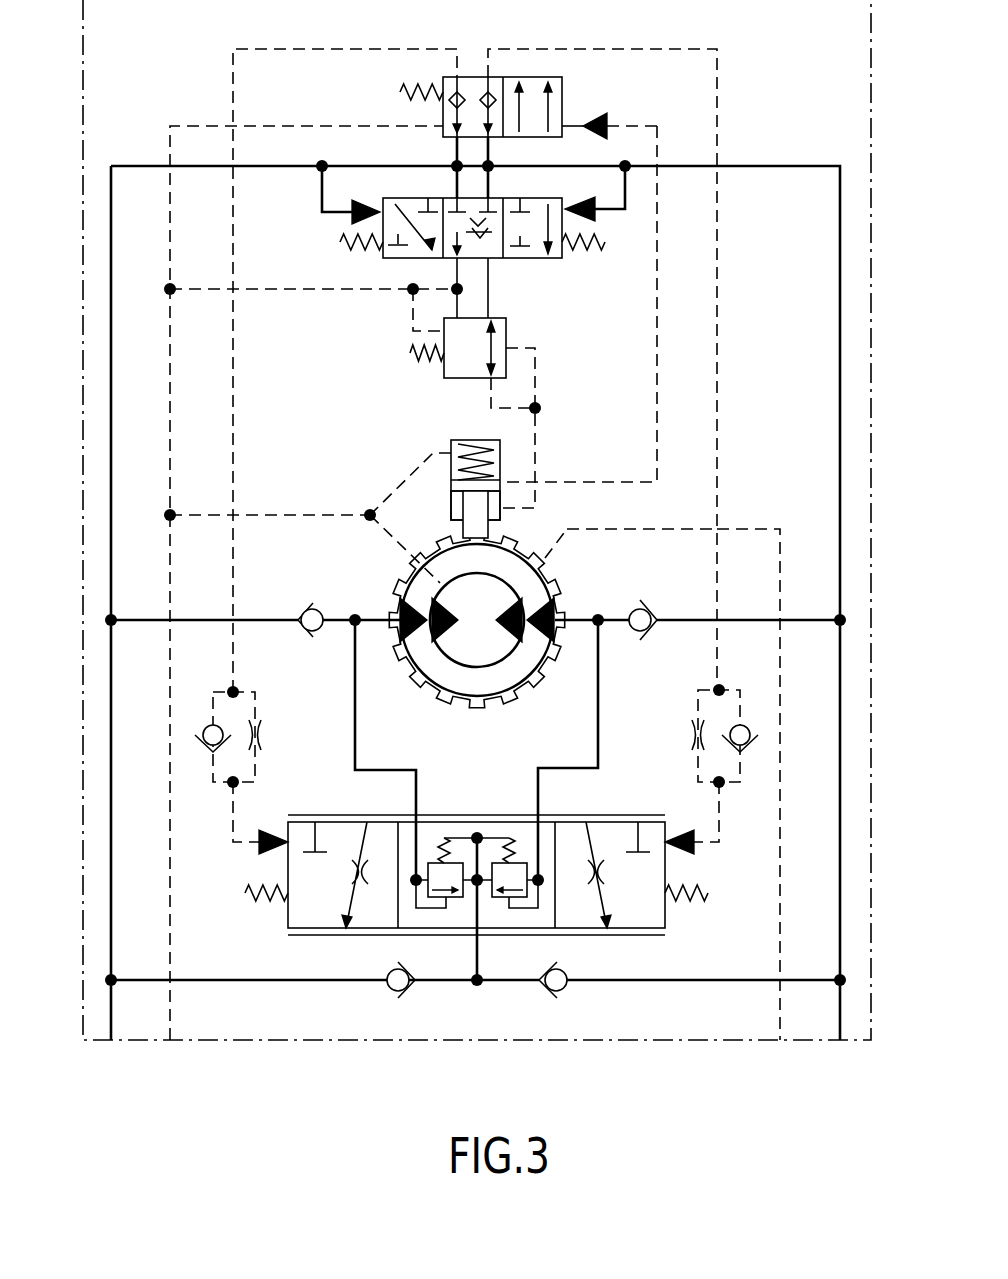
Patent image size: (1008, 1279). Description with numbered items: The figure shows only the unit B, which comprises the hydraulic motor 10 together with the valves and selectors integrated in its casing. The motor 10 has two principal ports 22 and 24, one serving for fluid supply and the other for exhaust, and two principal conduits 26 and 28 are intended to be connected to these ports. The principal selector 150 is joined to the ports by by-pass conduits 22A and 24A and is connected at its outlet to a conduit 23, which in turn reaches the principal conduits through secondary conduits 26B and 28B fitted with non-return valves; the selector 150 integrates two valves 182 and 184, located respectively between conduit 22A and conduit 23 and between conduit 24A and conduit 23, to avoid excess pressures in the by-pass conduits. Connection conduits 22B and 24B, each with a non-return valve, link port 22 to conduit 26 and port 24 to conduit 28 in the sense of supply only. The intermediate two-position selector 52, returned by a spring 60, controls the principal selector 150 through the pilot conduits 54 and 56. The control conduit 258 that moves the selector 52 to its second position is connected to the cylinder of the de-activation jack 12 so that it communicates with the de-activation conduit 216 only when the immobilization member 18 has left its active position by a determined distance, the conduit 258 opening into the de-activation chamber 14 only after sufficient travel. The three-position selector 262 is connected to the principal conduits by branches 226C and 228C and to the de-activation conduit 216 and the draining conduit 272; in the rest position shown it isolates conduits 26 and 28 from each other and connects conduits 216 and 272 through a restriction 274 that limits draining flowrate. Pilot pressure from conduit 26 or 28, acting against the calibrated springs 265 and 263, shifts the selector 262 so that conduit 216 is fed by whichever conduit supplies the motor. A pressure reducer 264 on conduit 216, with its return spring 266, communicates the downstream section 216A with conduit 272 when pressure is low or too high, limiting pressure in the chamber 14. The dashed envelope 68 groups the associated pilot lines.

The hydraulic motor 10 is at (545, 575).
The de-activation jack 12 is at (448, 441).
The de-activation chamber 14 is at (458, 508).
The immobilization member 18 is at (487, 525).
The principal port 22 is at (573, 626).
The by-pass conduit 22A is at (598, 722).
The connection conduit 22B is at (682, 622).
The conduit 23 is at (480, 965).
The principal port 24 is at (372, 612).
The by-pass conduit 24A is at (355, 718).
The connection conduit 24B is at (273, 622).
The principal conduit 26 is at (775, 166).
The secondary conduit 26B is at (690, 980).
The principal conduit 28 is at (252, 166).
The secondary conduit 28B is at (278, 980).
The intermediate two-position selector 52 is at (575, 91).
The pilot conduit 54 is at (717, 378).
The pilot conduit 56 is at (233, 360).
The spring 60 is at (400, 96).
The pilot enclosure 68 is at (170, 397).
The principal selector 150 is at (597, 808).
The valve 182 is at (509, 838).
The valve 184 is at (446, 838).
The de-activation conduit 216 is at (490, 286).
The section of conduit 216 216A is at (537, 462).
The branch 226C is at (492, 185).
The branch 228C is at (450, 186).
The control conduit 258 is at (657, 336).
The selector 262 is at (605, 222).
The spring 263 is at (606, 240).
The pressure reducer 264 is at (514, 332).
The spring 265 is at (340, 244).
The return spring 266 is at (410, 356).
The draining conduit 272 is at (328, 289).
The restriction 274 is at (455, 264).
The unit B is at (871, 302).